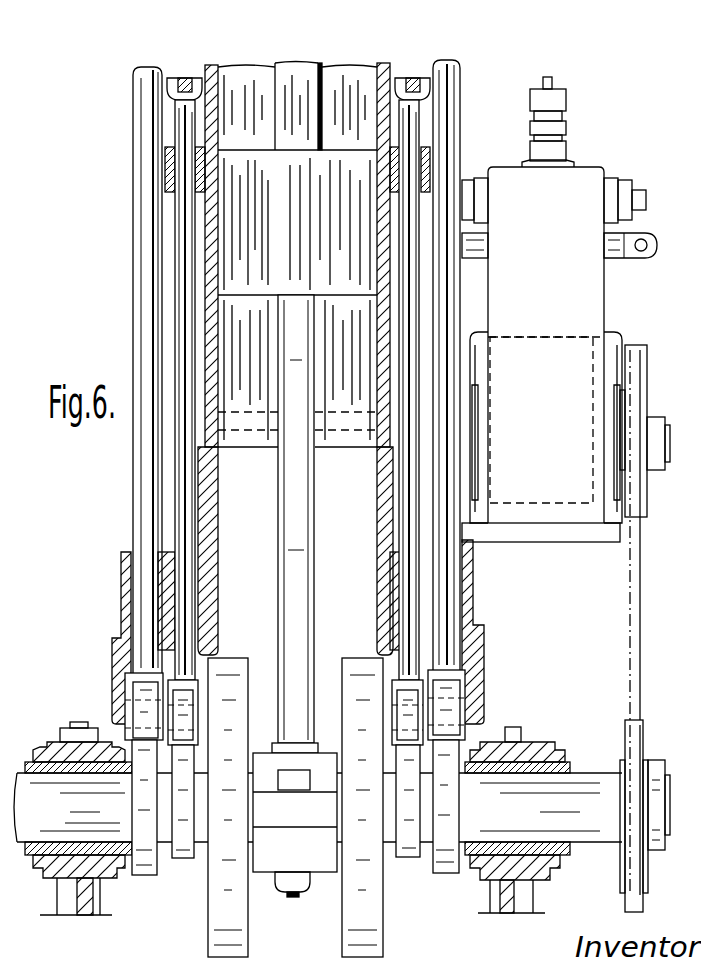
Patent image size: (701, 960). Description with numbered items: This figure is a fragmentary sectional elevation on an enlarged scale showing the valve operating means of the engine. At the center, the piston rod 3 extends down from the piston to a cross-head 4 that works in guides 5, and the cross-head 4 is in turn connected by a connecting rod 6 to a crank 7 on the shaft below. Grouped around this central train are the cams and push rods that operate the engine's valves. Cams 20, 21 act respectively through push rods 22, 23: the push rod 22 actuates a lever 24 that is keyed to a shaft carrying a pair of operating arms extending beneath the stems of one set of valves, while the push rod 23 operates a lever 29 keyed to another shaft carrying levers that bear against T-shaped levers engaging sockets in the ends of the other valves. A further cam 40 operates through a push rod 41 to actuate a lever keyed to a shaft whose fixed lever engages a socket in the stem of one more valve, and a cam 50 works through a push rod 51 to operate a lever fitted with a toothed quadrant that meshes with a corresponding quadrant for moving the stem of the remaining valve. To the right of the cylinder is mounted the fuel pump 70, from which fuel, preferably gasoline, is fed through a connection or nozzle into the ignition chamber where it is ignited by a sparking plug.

The piston rod 3 is at (310, 67).
The cross-head 4 is at (270, 288).
The guides 5 is at (255, 440).
The connecting rod 6 is at (302, 498).
The crank 7 is at (295, 820).
The cam 20 is at (188, 860).
The cam 21 is at (410, 857).
The push rod 22 is at (193, 660).
The push rod 23 is at (390, 660).
The lever 24 is at (188, 78).
The lever 29 is at (410, 77).
The cam 40 is at (447, 876).
The push rod 41 is at (464, 597).
The cam 50 is at (148, 878).
The push rod 51 is at (135, 512).
The fuel pump 70 is at (582, 298).